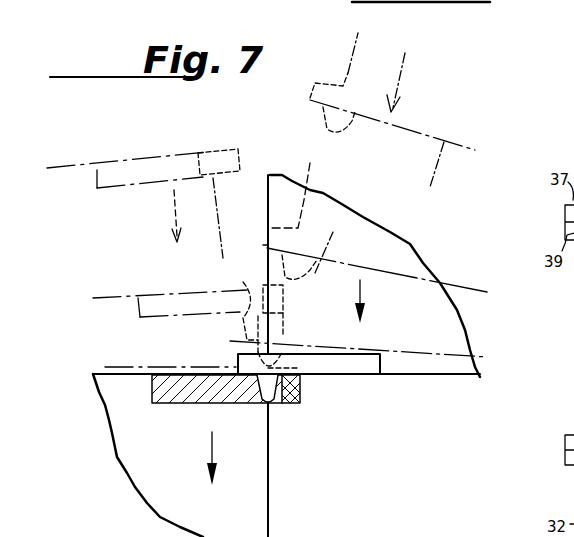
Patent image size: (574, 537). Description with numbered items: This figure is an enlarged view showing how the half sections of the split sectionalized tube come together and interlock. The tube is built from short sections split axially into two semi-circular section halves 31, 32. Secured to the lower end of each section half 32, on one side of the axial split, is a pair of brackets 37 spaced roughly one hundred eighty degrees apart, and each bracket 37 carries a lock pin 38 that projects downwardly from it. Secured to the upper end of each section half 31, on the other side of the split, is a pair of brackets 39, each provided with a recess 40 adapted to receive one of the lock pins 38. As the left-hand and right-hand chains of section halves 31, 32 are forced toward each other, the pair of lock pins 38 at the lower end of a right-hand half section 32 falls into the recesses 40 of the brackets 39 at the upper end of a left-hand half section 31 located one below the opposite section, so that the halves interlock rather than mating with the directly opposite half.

The semi-circular section half 31 is at (148, 158).
The semi-circular section half 32 is at (391, 250).
The bracket 37 is at (380, 365).
The lock pin 38 is at (350, 133).
The bracket 39 is at (152, 402).
The recess 40 is at (212, 150).